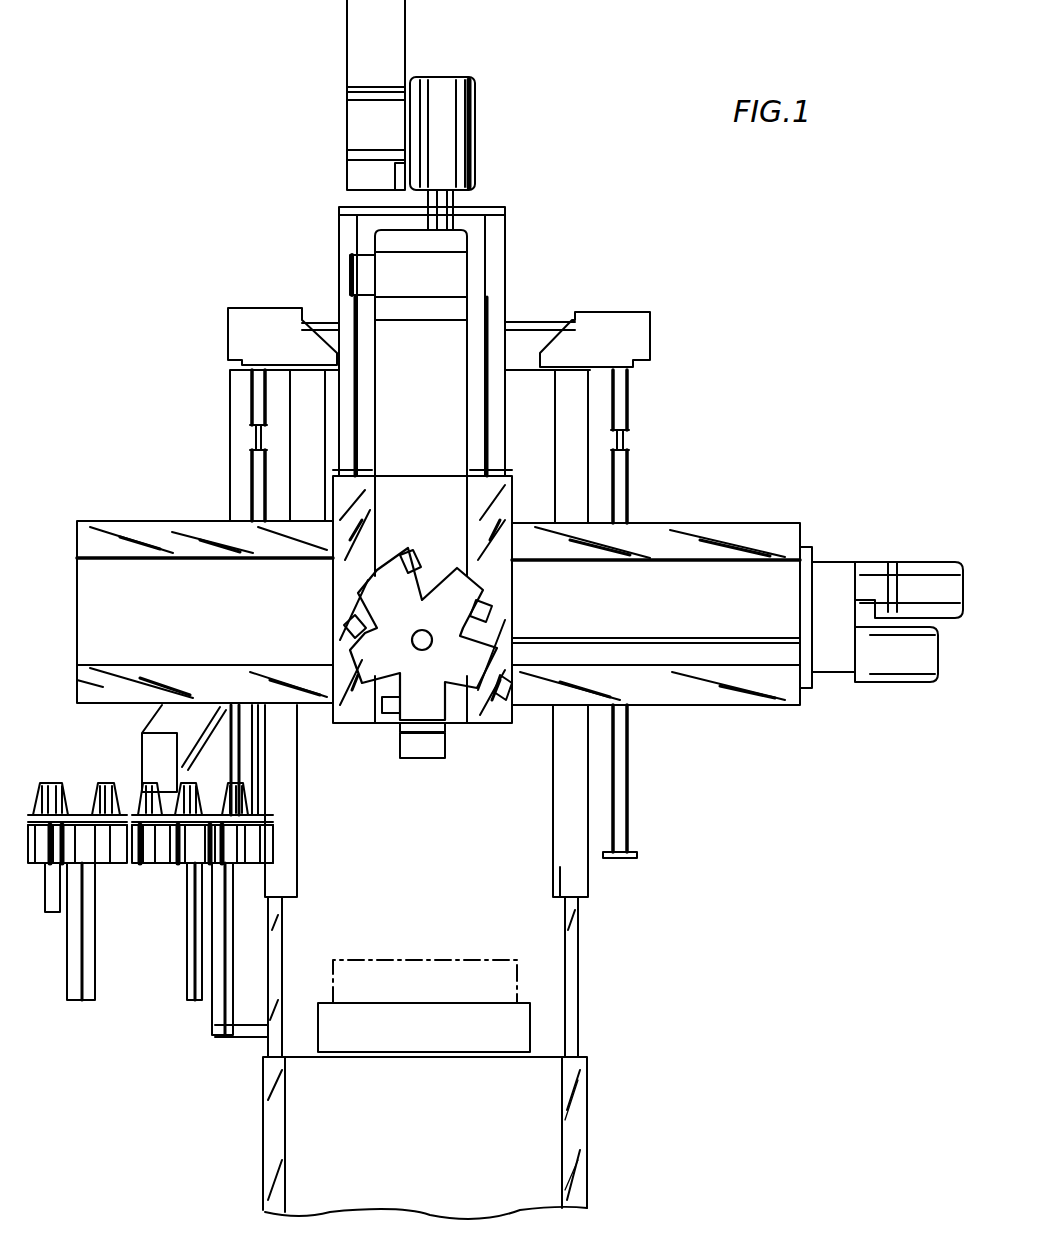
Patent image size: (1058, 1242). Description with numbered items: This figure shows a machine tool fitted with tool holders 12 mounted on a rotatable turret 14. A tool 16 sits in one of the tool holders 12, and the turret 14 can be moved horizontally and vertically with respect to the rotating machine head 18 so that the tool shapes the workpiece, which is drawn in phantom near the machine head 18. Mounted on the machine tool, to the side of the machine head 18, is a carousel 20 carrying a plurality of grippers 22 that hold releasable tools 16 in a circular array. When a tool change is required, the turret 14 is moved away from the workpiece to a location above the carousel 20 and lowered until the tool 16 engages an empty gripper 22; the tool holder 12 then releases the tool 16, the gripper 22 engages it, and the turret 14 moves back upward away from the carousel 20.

The tool holder 12 is at (343, 657).
The turret 14 is at (425, 600).
The tool 16 is at (110, 783).
The machine head 18 is at (520, 1030).
The carousel 20 is at (147, 833).
The gripper 22 is at (273, 830).